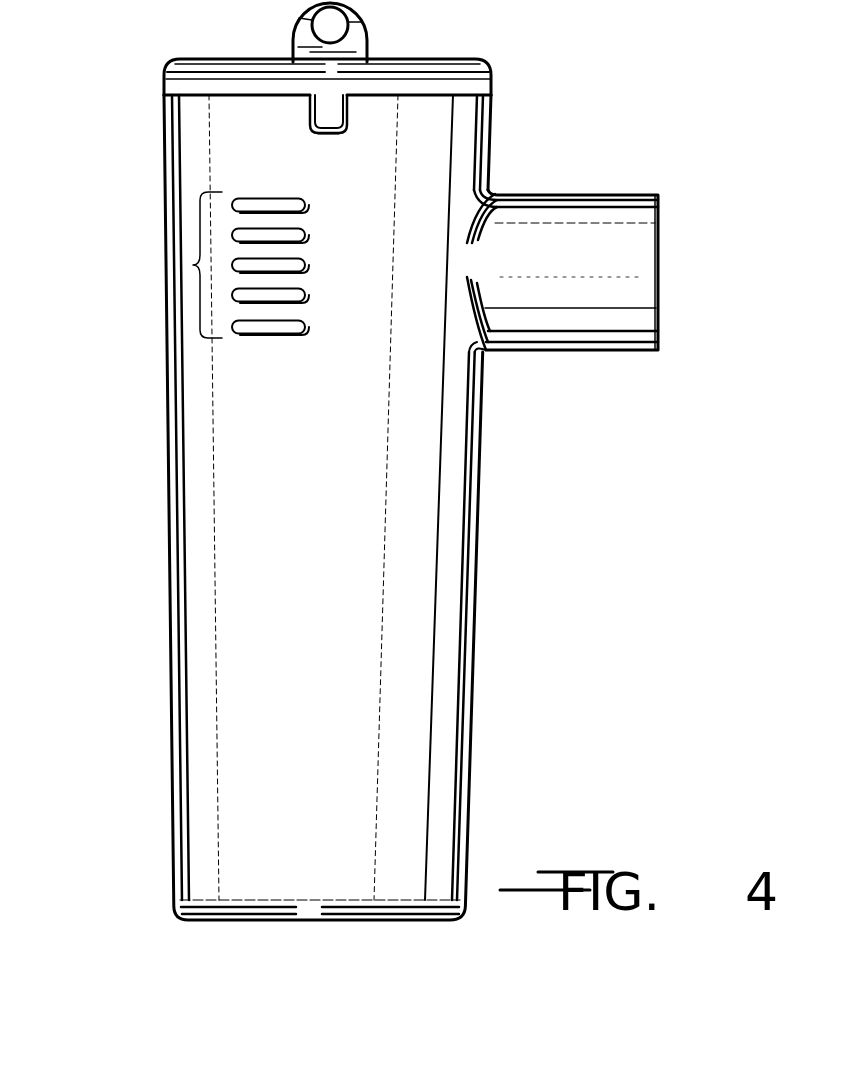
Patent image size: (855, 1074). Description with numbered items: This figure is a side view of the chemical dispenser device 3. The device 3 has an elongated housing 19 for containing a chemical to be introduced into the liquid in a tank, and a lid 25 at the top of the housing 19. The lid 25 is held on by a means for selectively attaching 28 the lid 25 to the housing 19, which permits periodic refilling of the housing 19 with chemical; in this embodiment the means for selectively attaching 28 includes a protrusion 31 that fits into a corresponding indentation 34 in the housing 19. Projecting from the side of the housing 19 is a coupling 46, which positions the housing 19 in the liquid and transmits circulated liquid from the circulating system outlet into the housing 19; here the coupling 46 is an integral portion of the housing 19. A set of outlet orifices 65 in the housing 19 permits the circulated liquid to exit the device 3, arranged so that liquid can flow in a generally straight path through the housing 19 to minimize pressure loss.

The device 3 is at (140, 525).
The housing 19 is at (188, 360).
The lid 25 is at (178, 86).
The means for selectively attaching 28 is at (330, 152).
The protrusion 31 is at (333, 118).
The indentation 34 is at (311, 126).
The coupling 46 is at (618, 192).
The outlet orifice 65 is at (193, 265).